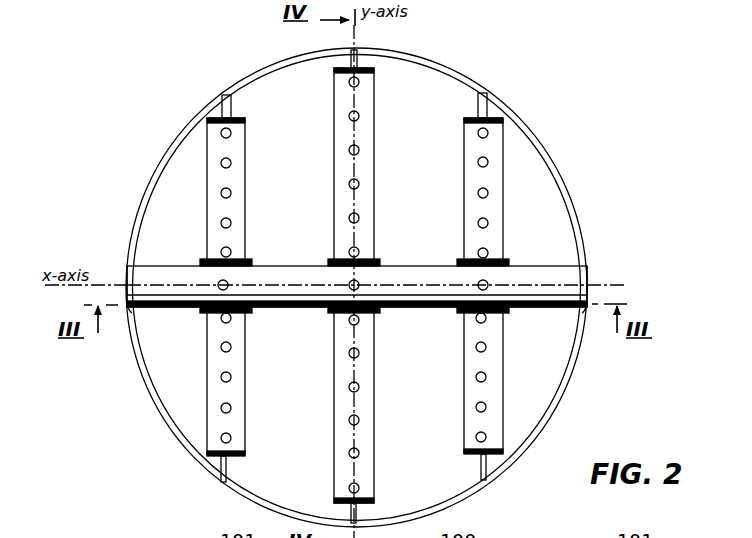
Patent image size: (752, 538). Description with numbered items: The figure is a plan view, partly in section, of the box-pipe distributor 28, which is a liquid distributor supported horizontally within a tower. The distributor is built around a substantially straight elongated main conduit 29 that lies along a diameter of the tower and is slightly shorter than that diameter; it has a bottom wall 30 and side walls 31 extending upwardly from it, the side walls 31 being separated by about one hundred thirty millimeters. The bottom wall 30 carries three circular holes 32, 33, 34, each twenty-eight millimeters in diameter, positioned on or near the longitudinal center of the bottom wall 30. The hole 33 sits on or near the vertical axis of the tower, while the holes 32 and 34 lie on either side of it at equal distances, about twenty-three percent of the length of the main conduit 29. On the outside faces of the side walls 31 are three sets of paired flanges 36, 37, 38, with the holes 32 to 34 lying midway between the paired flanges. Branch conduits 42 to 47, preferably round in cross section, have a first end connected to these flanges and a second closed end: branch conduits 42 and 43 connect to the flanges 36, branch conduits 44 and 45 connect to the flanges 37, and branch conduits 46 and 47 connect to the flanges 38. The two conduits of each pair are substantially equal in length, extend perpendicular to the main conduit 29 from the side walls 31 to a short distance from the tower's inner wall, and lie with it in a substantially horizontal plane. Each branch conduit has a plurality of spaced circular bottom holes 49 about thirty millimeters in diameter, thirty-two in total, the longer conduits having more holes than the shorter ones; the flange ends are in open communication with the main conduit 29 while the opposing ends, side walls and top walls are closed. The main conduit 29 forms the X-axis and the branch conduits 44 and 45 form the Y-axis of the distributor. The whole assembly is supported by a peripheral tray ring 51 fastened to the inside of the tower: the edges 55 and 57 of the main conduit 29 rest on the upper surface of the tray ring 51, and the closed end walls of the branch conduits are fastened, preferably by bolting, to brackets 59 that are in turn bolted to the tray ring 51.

The box-pipe distributor 28 is at (594, 193).
The main conduit 29 is at (583, 263).
The bottom wall 30 is at (177, 267).
The side walls 31 is at (132, 265).
The hole 32 is at (228, 286).
The hole 33 is at (359, 286).
The hole 34 is at (488, 287).
The paired flanges 36 is at (250, 262).
The paired flanges 37 is at (380, 262).
The paired flanges 38 is at (509, 262).
The branch conduit 42 is at (247, 143).
The branch conduit 43 is at (245, 440).
The branch conduit 44 is at (375, 169).
The branch conduit 45 is at (375, 471).
The branch conduit 46 is at (504, 197).
The branch conduit 47 is at (503, 376).
The bottom holes 49 is at (359, 117).
The tray ring 51 is at (528, 435).
The edge 55 is at (583, 310).
The edge 57 is at (130, 312).
The brackets 59 is at (350, 51).